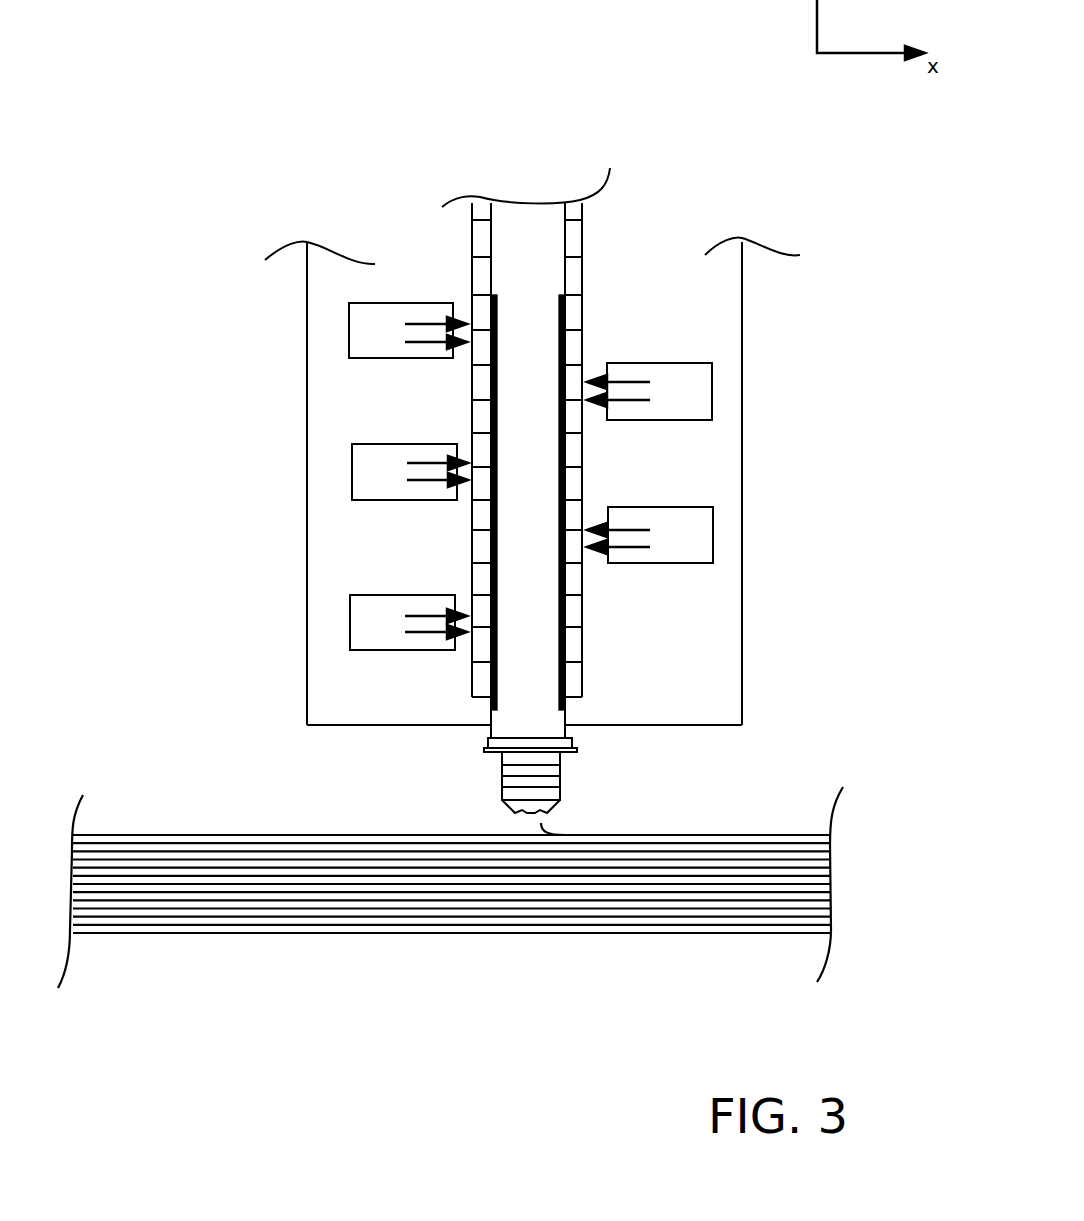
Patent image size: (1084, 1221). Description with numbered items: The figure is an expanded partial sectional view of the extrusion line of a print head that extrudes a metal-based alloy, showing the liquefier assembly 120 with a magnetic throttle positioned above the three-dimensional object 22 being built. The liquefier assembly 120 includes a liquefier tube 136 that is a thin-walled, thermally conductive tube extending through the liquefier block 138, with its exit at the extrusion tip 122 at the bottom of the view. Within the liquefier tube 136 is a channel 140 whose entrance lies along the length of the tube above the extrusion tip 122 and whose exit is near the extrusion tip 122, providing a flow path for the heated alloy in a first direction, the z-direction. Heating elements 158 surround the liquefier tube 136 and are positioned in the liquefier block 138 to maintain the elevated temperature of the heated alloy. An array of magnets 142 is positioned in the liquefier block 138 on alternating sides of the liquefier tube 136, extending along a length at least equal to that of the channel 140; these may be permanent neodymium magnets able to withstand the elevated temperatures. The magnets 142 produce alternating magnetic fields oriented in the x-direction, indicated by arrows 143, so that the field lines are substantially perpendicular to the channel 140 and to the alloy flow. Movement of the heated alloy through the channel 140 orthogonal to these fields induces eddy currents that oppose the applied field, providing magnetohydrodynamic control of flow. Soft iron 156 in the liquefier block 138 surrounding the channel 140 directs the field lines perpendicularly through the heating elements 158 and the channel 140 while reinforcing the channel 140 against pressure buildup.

The liquefier assembly 120 is at (202, 218).
The extrusion tip 122 is at (580, 797).
The liquefier tube 136 is at (492, 255).
The liquefier block 138 is at (272, 567).
The channel 140 is at (595, 288).
The magnets 142 is at (382, 338).
The arrows 143 is at (437, 483).
The soft iron 156 is at (687, 623).
The heating elements 158 is at (470, 290).
The 3D object 22 is at (260, 833).